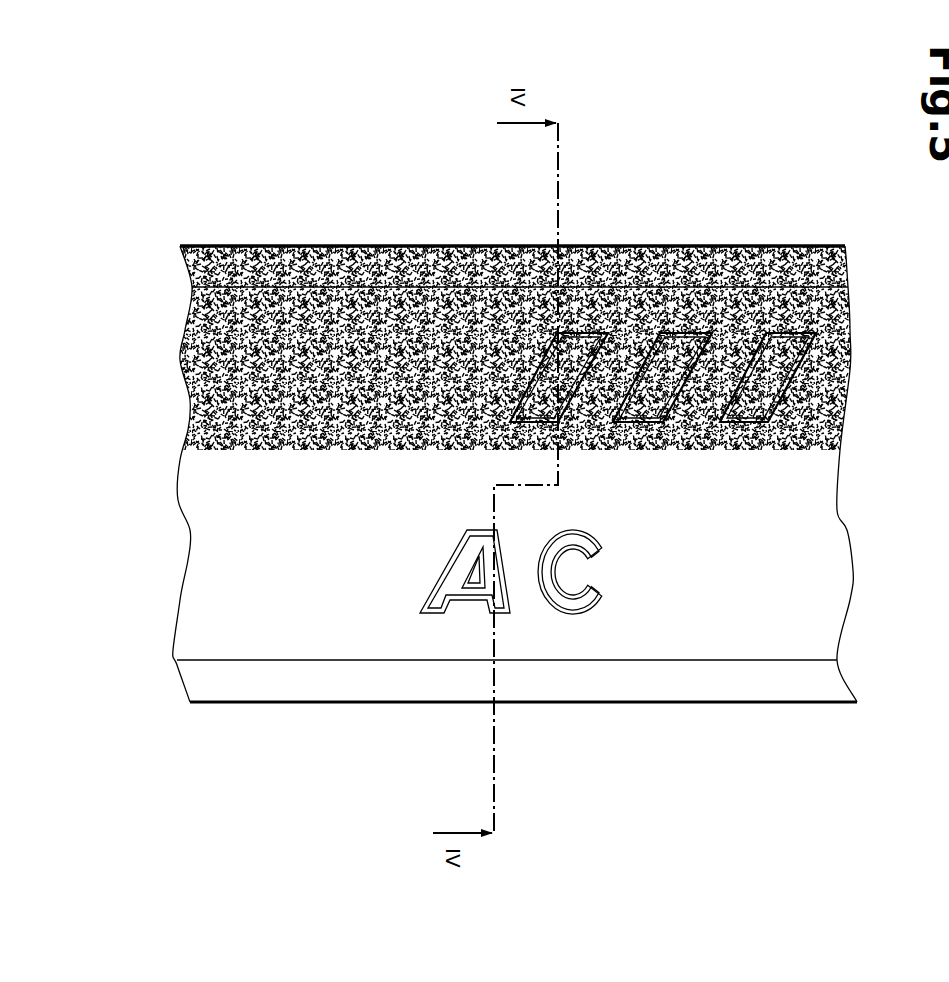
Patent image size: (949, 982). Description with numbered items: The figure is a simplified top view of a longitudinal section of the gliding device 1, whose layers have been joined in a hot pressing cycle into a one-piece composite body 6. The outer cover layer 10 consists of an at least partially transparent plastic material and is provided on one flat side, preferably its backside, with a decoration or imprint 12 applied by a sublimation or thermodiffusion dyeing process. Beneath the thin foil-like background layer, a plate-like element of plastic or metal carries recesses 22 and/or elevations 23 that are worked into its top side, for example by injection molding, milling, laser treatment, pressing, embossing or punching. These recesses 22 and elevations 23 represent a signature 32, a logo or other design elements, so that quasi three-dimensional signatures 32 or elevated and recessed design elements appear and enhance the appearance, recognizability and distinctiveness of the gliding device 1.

The gliding device 1 is at (519, 525).
The composite body 6 is at (730, 702).
The cover layer 10 is at (798, 546).
The imprint 12 is at (504, 348).
The recesses 22 is at (545, 667).
The elevations 23 is at (850, 400).
The signature 32 is at (596, 622).